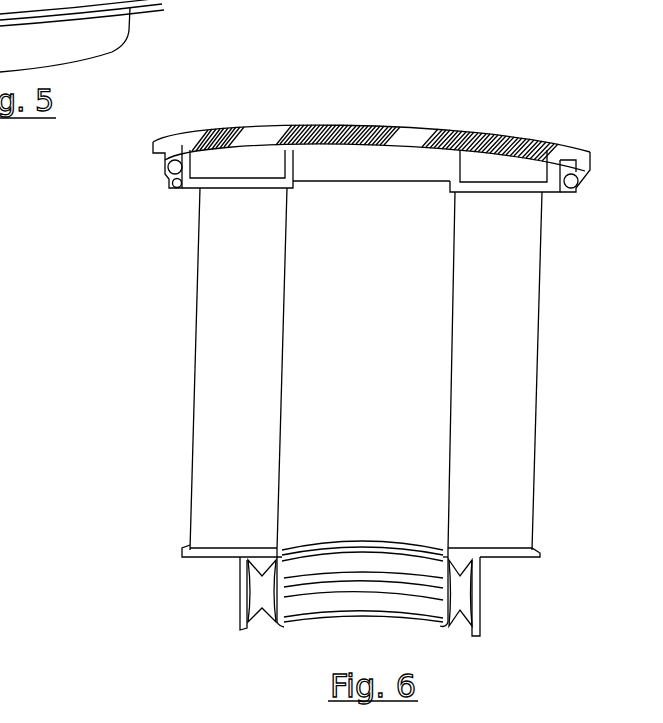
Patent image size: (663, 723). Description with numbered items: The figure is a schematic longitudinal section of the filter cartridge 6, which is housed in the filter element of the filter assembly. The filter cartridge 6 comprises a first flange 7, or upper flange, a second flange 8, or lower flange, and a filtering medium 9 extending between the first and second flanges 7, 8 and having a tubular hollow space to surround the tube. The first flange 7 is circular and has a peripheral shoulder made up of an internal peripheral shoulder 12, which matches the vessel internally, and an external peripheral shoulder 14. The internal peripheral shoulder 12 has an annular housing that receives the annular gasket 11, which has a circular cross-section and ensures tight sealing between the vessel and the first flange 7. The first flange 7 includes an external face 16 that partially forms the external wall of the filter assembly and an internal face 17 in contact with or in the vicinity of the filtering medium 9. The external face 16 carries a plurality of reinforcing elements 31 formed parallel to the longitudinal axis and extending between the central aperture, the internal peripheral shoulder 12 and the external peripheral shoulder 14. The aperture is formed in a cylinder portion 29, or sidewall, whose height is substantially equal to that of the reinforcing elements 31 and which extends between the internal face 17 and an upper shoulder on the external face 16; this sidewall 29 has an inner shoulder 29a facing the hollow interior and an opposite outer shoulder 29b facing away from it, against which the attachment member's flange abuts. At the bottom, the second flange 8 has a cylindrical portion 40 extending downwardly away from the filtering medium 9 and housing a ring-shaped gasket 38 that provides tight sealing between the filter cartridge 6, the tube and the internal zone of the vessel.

The filter cartridge 6 is at (156, 371).
The first flange 7 is at (532, 167).
The second flange 8 is at (182, 553).
The filtering medium 9 is at (215, 442).
The gasket 11 is at (168, 168).
The internal peripheral shoulder 12 is at (176, 190).
The external peripheral shoulder 14 is at (160, 140).
The external face 16 is at (220, 142).
The internal face 17 is at (500, 202).
The cylinder portion 29 is at (383, 162).
The inner shoulder 29a is at (453, 194).
The outer shoulder 29b is at (437, 142).
The reinforcing elements 31 is at (257, 160).
The gasket 38 is at (240, 587).
The cylindrical portion 40 is at (244, 617).